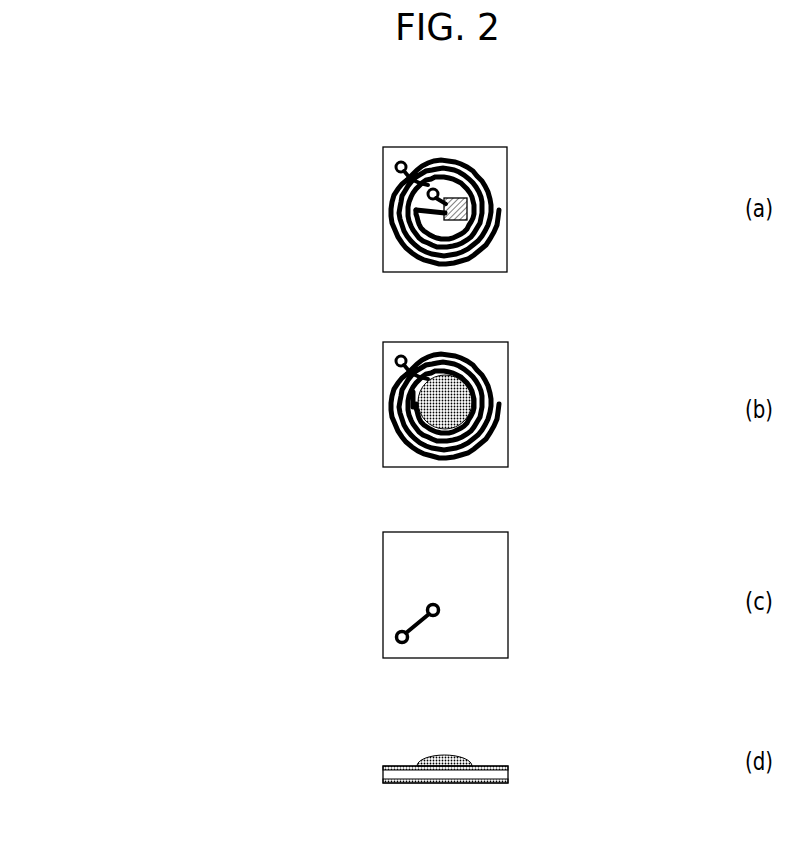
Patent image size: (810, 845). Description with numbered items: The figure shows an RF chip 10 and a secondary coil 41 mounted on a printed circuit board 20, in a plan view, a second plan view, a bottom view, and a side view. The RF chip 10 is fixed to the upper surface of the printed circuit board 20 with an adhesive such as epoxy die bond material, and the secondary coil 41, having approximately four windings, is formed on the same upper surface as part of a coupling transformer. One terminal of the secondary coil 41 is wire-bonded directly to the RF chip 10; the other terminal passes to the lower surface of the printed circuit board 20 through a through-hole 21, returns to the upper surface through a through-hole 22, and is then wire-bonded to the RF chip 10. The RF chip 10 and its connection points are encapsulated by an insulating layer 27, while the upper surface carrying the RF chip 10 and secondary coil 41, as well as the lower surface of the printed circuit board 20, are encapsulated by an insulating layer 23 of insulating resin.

The RF chip 10 is at (441, 209).
The printed circuit board 20 is at (393, 262).
The through-hole 21 is at (433, 130).
The through-hole 22 is at (427, 192).
The insulating layer 23 is at (390, 781).
The insulating layer 27 is at (414, 405).
The secondary coil 41 is at (499, 199).